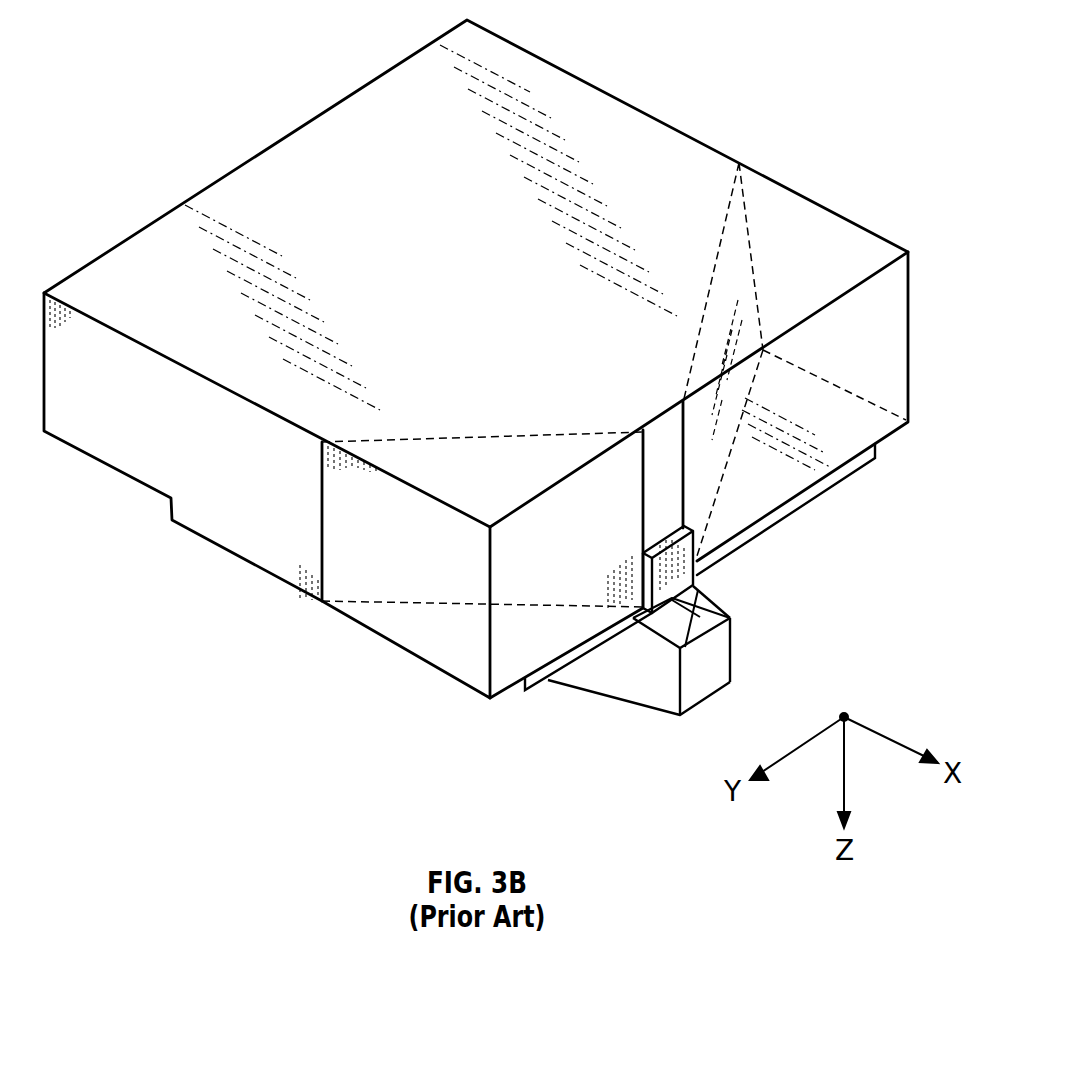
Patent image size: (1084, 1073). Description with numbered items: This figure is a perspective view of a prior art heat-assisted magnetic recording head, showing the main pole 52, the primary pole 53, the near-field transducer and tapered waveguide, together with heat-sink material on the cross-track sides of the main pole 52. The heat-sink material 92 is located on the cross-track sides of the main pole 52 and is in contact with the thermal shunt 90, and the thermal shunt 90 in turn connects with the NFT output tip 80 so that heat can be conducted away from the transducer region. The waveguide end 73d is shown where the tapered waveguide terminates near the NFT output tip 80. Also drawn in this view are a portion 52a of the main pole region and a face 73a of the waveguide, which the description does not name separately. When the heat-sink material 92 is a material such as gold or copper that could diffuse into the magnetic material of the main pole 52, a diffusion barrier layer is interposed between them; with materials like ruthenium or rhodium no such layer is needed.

The main pole 52 is at (625, 337).
The light entrance block of slider 52a is at (683, 557).
The primary pole 53 is at (338, 130).
The thermal shunt 90 is at (863, 465).
The heat-sink material 92 is at (868, 253).
The laser diode side face 73a is at (648, 687).
The waveguide end 73d is at (718, 650).
The NFT output tip 80 is at (673, 630).